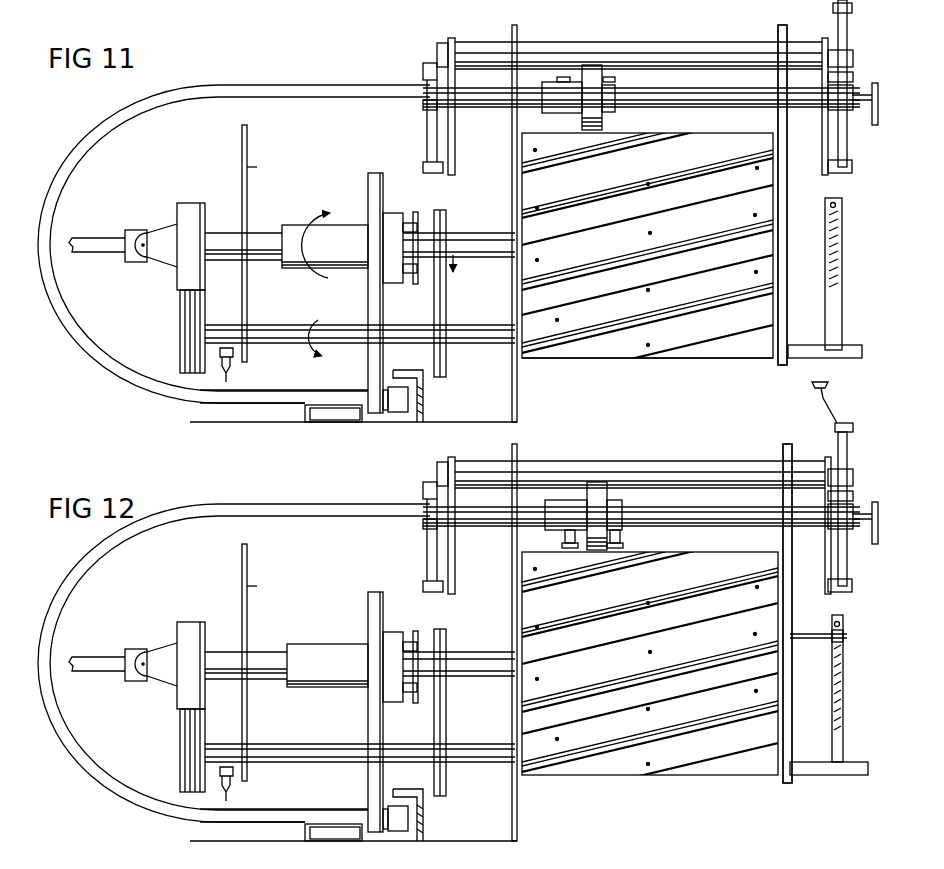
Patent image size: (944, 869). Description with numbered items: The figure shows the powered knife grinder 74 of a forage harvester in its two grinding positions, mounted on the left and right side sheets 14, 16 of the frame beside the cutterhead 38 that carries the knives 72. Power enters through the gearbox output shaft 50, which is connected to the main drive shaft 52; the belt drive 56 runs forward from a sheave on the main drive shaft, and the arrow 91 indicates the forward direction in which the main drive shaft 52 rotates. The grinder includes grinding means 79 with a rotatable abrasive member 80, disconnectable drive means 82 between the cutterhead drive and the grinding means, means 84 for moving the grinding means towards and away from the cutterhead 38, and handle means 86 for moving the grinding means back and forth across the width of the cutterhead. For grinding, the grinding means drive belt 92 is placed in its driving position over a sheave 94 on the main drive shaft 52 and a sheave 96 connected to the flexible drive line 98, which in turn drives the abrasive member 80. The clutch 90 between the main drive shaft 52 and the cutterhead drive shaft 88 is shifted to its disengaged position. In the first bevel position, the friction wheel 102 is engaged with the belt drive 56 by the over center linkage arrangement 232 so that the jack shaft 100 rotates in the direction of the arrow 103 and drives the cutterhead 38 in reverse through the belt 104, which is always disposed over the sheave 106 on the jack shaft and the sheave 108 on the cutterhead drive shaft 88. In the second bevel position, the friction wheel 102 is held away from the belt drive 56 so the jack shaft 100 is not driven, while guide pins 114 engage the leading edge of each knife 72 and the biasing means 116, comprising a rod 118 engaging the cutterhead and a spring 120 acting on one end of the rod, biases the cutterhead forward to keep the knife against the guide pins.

In FIG. 11, the left side sheet 14 is at (491, 223).
In FIG. 12, the left side sheet 14 is at (512, 580).
In FIG. 11, the right side sheet 16 is at (797, 140).
In FIG. 12, the right side sheet 16 is at (792, 545).
In FIG. 11, the cutterhead 38 is at (570, 358).
In FIG. 11, the output shaft 50 is at (84, 238).
In FIG. 12, the main drive shaft 52 is at (268, 647).
In FIG. 11, the belt drive 56 is at (193, 203).
In FIG. 12, the belt drive 56 is at (195, 622).
In FIG. 11, the knives 72 is at (673, 260).
In FIG. 12, the knives 72 is at (590, 610).
In FIG. 11, the powered knife grinder 74 is at (567, 37).
In FIG. 12, the powered knife grinder 74 is at (579, 455).
In FIG. 11, the grinding means 79 is at (623, 68).
In FIG. 12, the grinding means 79 is at (596, 474).
In FIG. 11, the rotatable abrasive member 80 is at (603, 124).
In FIG. 12, the rotatable abrasive member 80 is at (600, 495).
In FIG. 11, the disconnectable drive means 82 is at (128, 398).
In FIG. 12, the disconnectable drive means 82 is at (98, 797).
In FIG. 11, the moving means 84 is at (777, 15).
In FIG. 12, the moving means 84 is at (772, 453).
In FIG. 11, the handle means 86 is at (873, 73).
In FIG. 12, the handle means 86 is at (873, 488).
In FIG. 11, the cutterhead drive shaft 88 is at (500, 225).
In FIG. 12, the cutterhead drive shaft 88 is at (493, 652).
In FIG. 11, the clutch 90 is at (412, 158).
In FIG. 12, the clutch 90 is at (405, 593).
In FIG. 11, the direction arrow 91 is at (330, 208).
In FIG. 11, the grinding means drive belt 92 is at (376, 173).
In FIG. 11, the sheave 94 is at (325, 266).
In FIG. 11, the sheave 96 is at (370, 392).
In FIG. 11, the flexible drive line 98 is at (93, 363).
In FIG. 12, the flexible drive line 98 is at (83, 769).
In FIG. 11, the jack shaft 100 is at (295, 302).
In FIG. 12, the jack shaft 100 is at (293, 743).
In FIG. 11, the friction wheel 102 is at (188, 317).
In FIG. 12, the friction wheel 102 is at (188, 730).
In FIG. 11, the direction arrow 103 is at (312, 362).
In FIG. 11, the belt 104 is at (443, 292).
In FIG. 12, the belt 104 is at (442, 708).
In FIG. 11, the sheave 106 is at (447, 366).
In FIG. 12, the sheave 106 is at (447, 782).
In FIG. 11, the sheave 108 is at (453, 197).
In FIG. 11, the guide pins 114 is at (609, 77).
In FIG. 12, the guide pins 114 is at (545, 540).
In FIG. 11, the biasing means 116 is at (848, 240).
In FIG. 12, the biasing means 116 is at (853, 637).
In FIG. 12, the rod 118 is at (812, 640).
In FIG. 12, the spring 120 is at (845, 702).
In FIG. 11, the over center linkage arrangement 232 is at (213, 373).
In FIG. 12, the over center linkage arrangement 232 is at (213, 793).